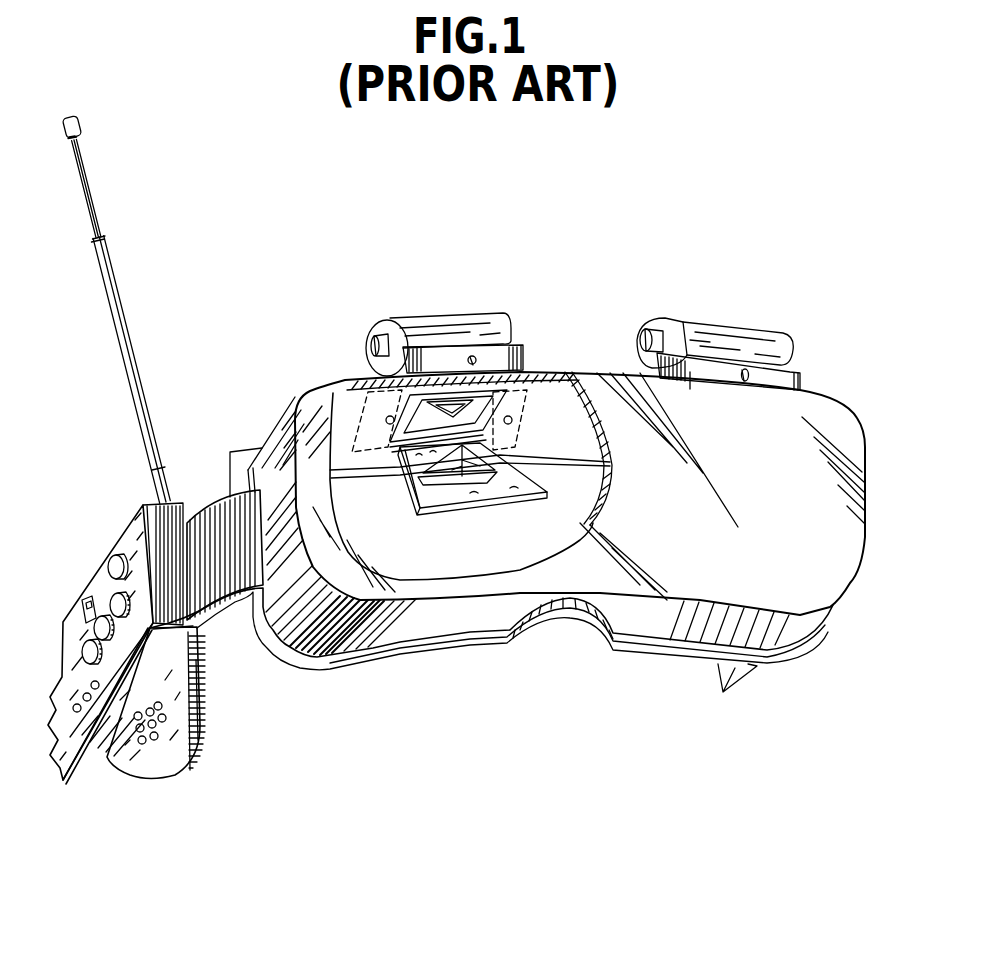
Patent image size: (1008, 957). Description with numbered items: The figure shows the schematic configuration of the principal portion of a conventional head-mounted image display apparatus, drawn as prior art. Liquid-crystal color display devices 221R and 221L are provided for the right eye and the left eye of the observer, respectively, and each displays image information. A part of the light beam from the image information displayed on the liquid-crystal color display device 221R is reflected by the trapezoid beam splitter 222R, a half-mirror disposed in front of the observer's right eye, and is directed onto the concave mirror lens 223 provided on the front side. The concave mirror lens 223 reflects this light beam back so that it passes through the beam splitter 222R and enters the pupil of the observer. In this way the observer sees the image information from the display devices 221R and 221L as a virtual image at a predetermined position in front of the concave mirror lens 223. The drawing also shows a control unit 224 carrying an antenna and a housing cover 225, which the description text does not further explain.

The liquid-crystal color display device 221R is at (455, 320).
The liquid-crystal color display device 221L is at (722, 330).
The trapezoid beam splitter 222R is at (458, 497).
The concave mirror lens 223 is at (833, 543).
The control unit with antenna 224 is at (87, 768).
The housing cover 225 is at (822, 418).